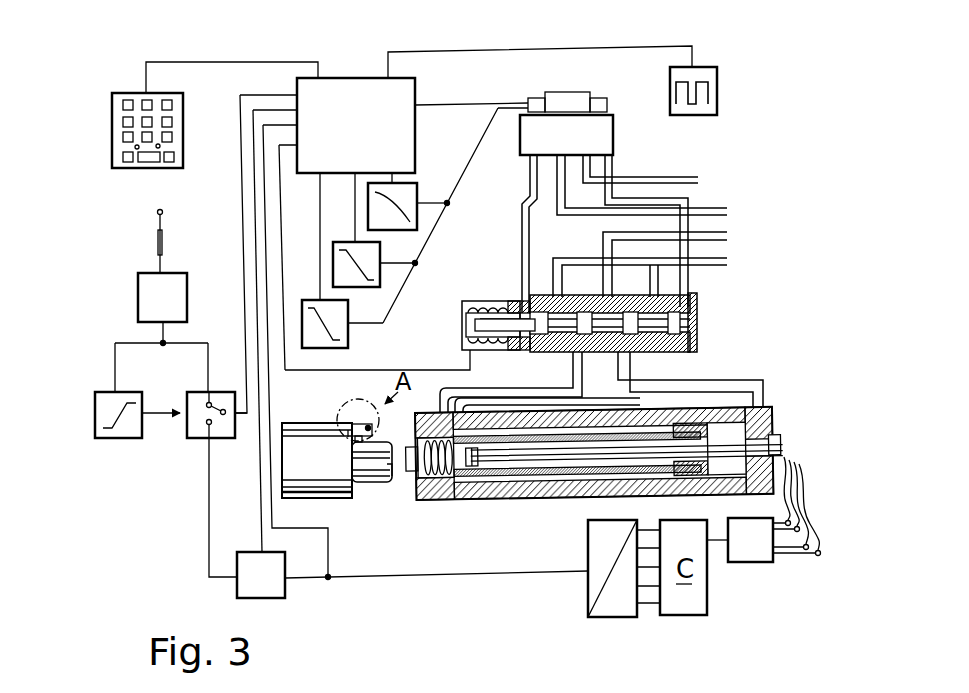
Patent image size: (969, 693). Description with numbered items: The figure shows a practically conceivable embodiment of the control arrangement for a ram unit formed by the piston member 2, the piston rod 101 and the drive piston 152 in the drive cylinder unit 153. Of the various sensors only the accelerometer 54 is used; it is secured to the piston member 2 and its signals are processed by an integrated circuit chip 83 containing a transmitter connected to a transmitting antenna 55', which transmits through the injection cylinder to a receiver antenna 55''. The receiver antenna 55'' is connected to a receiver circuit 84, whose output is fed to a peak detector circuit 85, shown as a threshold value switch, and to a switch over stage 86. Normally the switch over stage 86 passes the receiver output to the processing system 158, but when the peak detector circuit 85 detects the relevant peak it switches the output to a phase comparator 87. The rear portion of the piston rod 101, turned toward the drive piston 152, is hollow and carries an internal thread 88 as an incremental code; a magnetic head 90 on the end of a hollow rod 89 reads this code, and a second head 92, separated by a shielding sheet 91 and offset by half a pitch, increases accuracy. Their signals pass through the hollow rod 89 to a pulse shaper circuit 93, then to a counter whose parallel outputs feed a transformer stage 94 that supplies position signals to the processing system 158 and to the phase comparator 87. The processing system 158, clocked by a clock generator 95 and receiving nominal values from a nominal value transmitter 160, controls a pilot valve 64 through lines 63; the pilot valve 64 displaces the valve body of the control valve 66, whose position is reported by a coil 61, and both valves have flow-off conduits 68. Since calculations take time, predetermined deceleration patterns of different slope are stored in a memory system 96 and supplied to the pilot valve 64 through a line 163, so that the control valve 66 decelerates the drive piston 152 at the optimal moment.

The piston member 2 is at (333, 500).
The accelerometer 54 is at (355, 420).
The transmitting antenna 55' is at (390, 418).
The receiver antenna 55'' is at (184, 242).
The coil 61 is at (463, 344).
The lines 63 is at (450, 104).
The pilot valve 64 is at (577, 148).
The control valve 66 is at (700, 332).
The flow-off conduits 68 is at (726, 217).
The integrated circuit chip 83 is at (362, 403).
The receiver circuit 84 is at (172, 307).
The peak detector circuit 85 is at (113, 440).
The switch over stage 86 is at (210, 440).
The phase comparator 87 is at (286, 590).
The internal thread 88 is at (447, 498).
The hollow rod 89 is at (735, 443).
The magnetic head 90 is at (470, 414).
The shielding sheet 91 is at (462, 482).
The second head 92 is at (472, 478).
The pulse shaper circuit 93 is at (762, 553).
The transformer stage 94 is at (587, 590).
The clock generator 95 is at (718, 90).
The memory system 96 is at (418, 192).
The piston rod 101 is at (372, 487).
The drive piston 152 is at (660, 409).
The drive cylinder unit 153 is at (606, 459).
The processing system 158 is at (370, 133).
The nominal value transmitter 160 is at (184, 138).
The line 163 is at (475, 157).